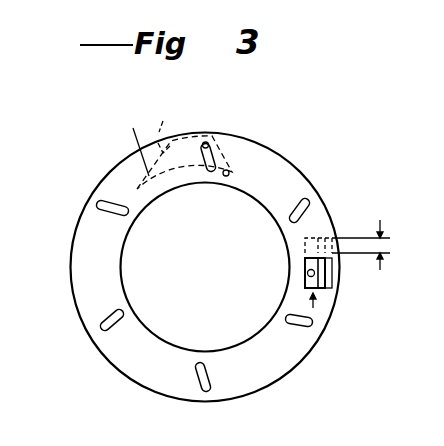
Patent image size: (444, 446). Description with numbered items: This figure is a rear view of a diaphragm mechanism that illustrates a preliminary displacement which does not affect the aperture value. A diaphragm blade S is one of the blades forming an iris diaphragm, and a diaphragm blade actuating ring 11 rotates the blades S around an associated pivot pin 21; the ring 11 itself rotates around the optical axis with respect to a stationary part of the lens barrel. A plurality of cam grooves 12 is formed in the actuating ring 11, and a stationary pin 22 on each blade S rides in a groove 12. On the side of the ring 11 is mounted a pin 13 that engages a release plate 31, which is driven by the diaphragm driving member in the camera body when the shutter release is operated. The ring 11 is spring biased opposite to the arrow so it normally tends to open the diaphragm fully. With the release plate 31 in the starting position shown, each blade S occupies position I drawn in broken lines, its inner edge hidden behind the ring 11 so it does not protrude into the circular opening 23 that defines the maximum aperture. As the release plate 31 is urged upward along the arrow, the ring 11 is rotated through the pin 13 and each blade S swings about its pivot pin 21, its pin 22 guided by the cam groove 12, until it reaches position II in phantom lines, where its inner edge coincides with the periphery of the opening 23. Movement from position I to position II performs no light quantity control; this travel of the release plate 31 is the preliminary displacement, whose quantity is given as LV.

The diaphragm blade actuating ring 11 is at (86, 280).
The cam grooves 12 is at (96, 204).
The pin 13 is at (307, 274).
The pivot pin 21 is at (229, 172).
The stationary pin 22 is at (206, 142).
The circular opening 23 is at (215, 247).
The release plate 31 is at (358, 264).
The diaphragm blade S is at (156, 188).
The preliminary displacement quantity LV is at (325, 282).
The blade starting position I is at (165, 128).
The blade fully opened position II is at (137, 145).